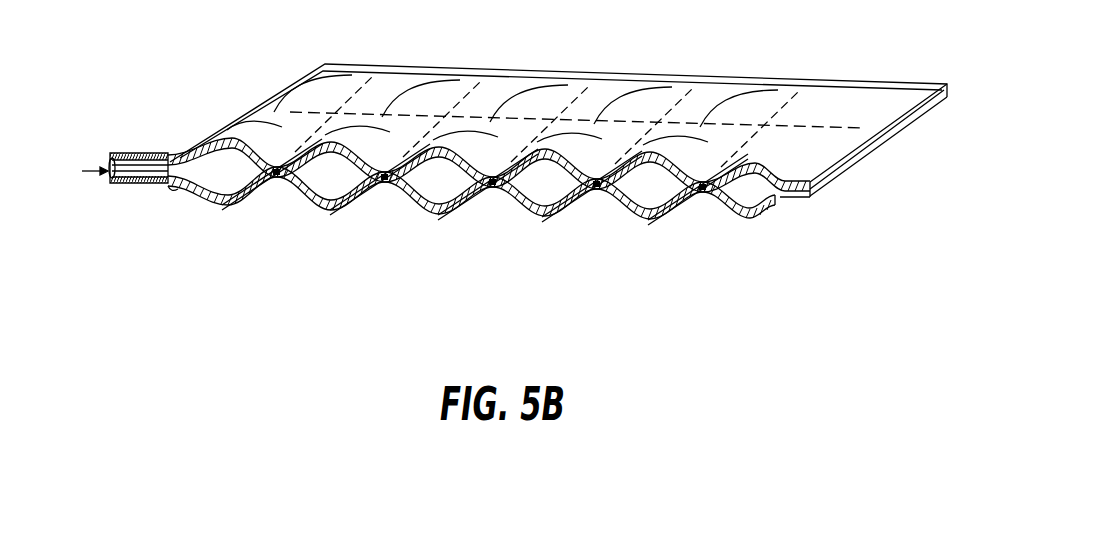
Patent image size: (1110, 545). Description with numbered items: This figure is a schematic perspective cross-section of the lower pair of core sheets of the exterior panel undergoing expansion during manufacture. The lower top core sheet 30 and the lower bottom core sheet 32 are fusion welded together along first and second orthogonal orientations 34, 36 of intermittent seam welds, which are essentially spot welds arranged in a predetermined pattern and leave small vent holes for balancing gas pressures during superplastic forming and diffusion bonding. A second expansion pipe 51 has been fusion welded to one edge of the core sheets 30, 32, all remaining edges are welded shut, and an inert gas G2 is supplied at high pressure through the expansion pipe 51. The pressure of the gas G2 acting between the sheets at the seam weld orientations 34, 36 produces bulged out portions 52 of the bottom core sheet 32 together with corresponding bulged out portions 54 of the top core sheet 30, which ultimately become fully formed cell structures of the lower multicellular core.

The lower top core sheet 30 is at (912, 86).
The lower bottom core sheet 32 is at (887, 142).
The first orientation of intermittent seam welds 34 is at (427, 117).
The second orientation of intermittent seam welds 36 is at (384, 92).
The second expansion pipe 51 is at (147, 152).
The bulged out portions of the bottom core sheet 52 is at (228, 205).
The bulged out portions of the upper core sheet 54 is at (214, 136).
The inert gas G2 is at (81, 171).